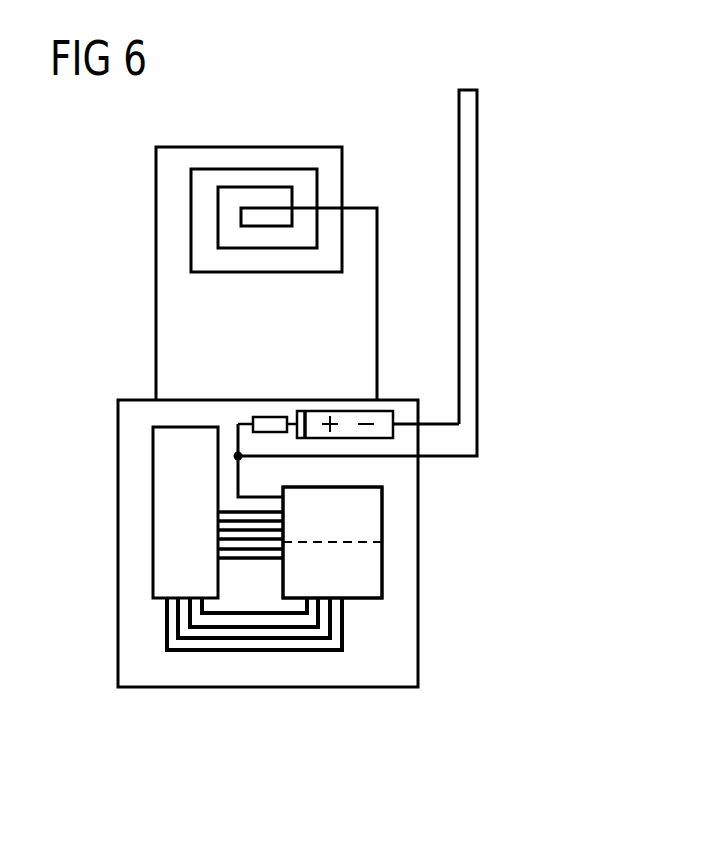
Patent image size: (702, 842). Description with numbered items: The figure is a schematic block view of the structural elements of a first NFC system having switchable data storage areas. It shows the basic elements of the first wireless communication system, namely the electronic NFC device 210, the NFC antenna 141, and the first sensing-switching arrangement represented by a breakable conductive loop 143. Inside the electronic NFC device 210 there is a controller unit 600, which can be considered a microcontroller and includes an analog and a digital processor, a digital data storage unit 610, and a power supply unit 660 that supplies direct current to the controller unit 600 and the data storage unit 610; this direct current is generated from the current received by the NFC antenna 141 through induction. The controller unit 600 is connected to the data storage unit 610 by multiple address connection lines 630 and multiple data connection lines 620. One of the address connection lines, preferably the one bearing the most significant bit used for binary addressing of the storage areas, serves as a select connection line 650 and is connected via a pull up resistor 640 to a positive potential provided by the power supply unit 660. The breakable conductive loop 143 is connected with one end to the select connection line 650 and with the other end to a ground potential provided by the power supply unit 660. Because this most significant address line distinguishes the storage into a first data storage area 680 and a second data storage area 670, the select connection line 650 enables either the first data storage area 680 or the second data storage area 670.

The NFC antenna 141 is at (262, 147).
The breakable conductive loop 143 is at (477, 238).
The electronic NFC device 210 is at (405, 548).
The controller unit 600 is at (165, 529).
The digital data storage unit 610 is at (367, 600).
The data connection lines 620 is at (235, 650).
The address connection lines 630 is at (253, 565).
The pull up resistor 640 is at (272, 417).
The select connection line 650 is at (237, 482).
The power supply unit 660 is at (353, 411).
The second data storage area 670 is at (370, 517).
The first data storage area 680 is at (370, 578).